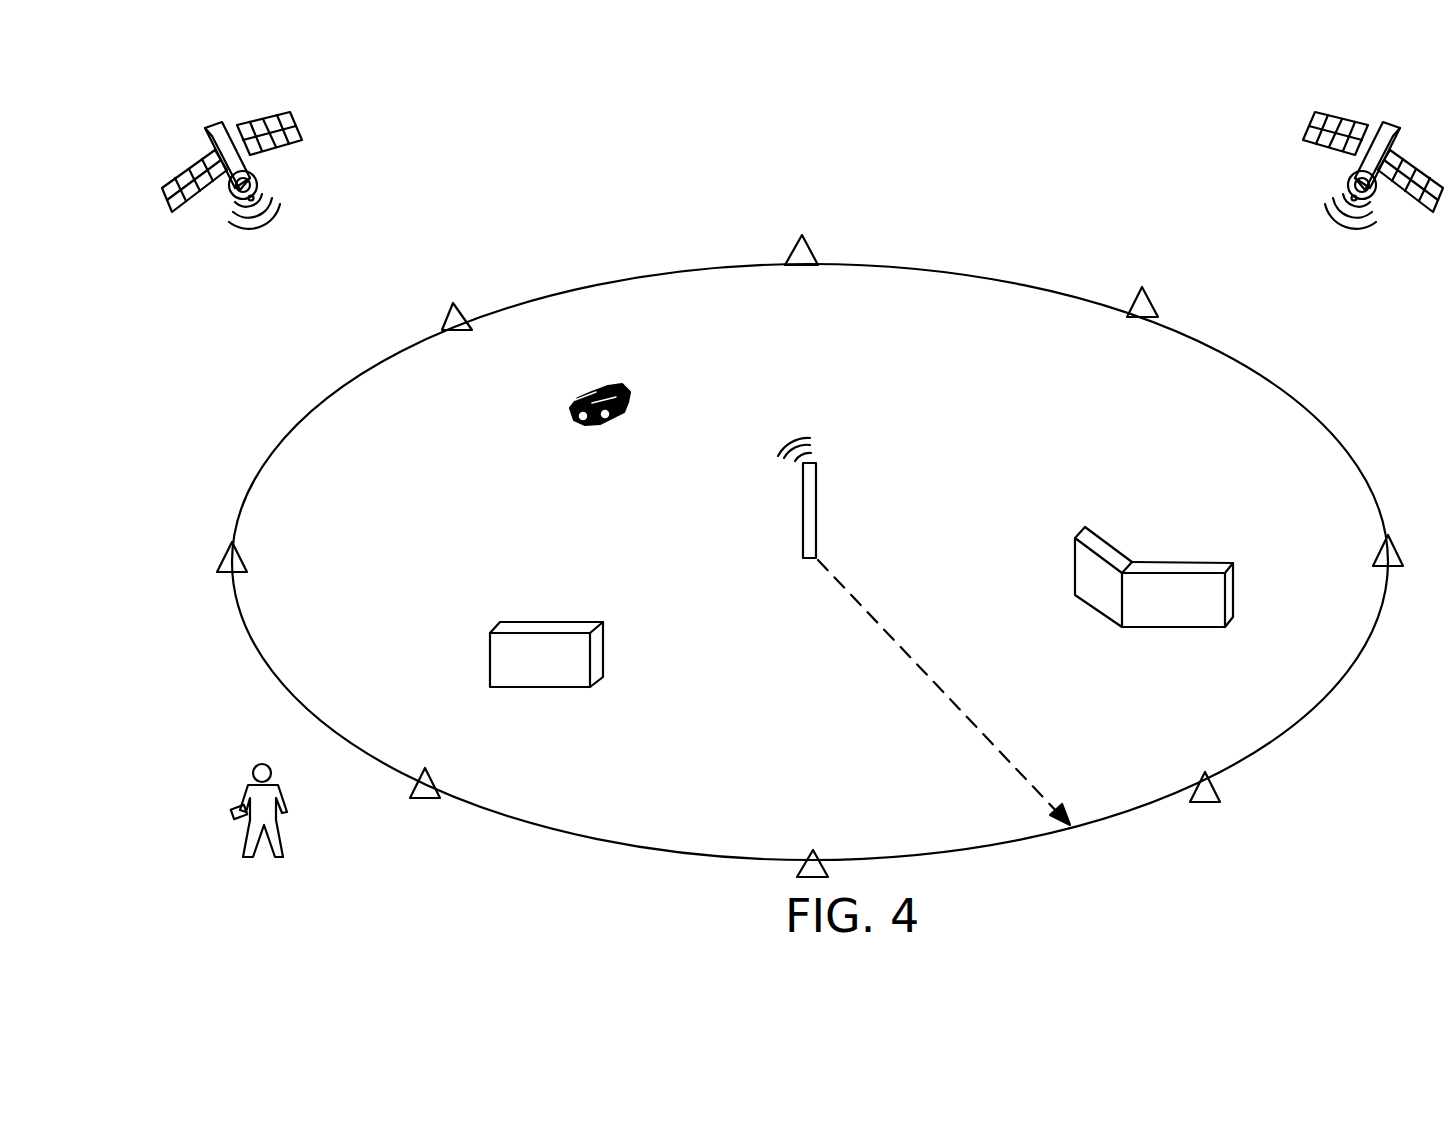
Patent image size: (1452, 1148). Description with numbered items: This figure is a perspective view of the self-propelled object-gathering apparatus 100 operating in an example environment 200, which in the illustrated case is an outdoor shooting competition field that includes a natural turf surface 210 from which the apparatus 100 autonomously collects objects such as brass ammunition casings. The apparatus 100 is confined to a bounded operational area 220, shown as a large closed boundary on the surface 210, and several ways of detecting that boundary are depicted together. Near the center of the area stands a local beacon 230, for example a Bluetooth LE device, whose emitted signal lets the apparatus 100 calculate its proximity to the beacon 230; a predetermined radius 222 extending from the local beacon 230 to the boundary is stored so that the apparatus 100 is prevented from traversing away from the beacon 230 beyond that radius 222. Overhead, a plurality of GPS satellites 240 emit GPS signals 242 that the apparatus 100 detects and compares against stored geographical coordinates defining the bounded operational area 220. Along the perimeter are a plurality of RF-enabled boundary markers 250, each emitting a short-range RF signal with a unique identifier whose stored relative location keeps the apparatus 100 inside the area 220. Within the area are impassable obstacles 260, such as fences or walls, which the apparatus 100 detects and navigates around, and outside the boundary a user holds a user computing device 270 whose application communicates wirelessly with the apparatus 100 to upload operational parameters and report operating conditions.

The self-propelled object-gathering apparatus 100 is at (648, 382).
The environment 200 is at (627, 172).
The surface 210 is at (1018, 398).
The bounded operational area 220 is at (975, 275).
The predetermined radius 222 is at (945, 700).
The local beacon 230 is at (818, 510).
The GPS satellites 240 is at (218, 128).
The GPS signals 242 is at (288, 185).
The RF-enabled boundary markers 250 is at (802, 235).
The impassable obstacles 260 is at (530, 622).
The user computing device 270 is at (233, 808).